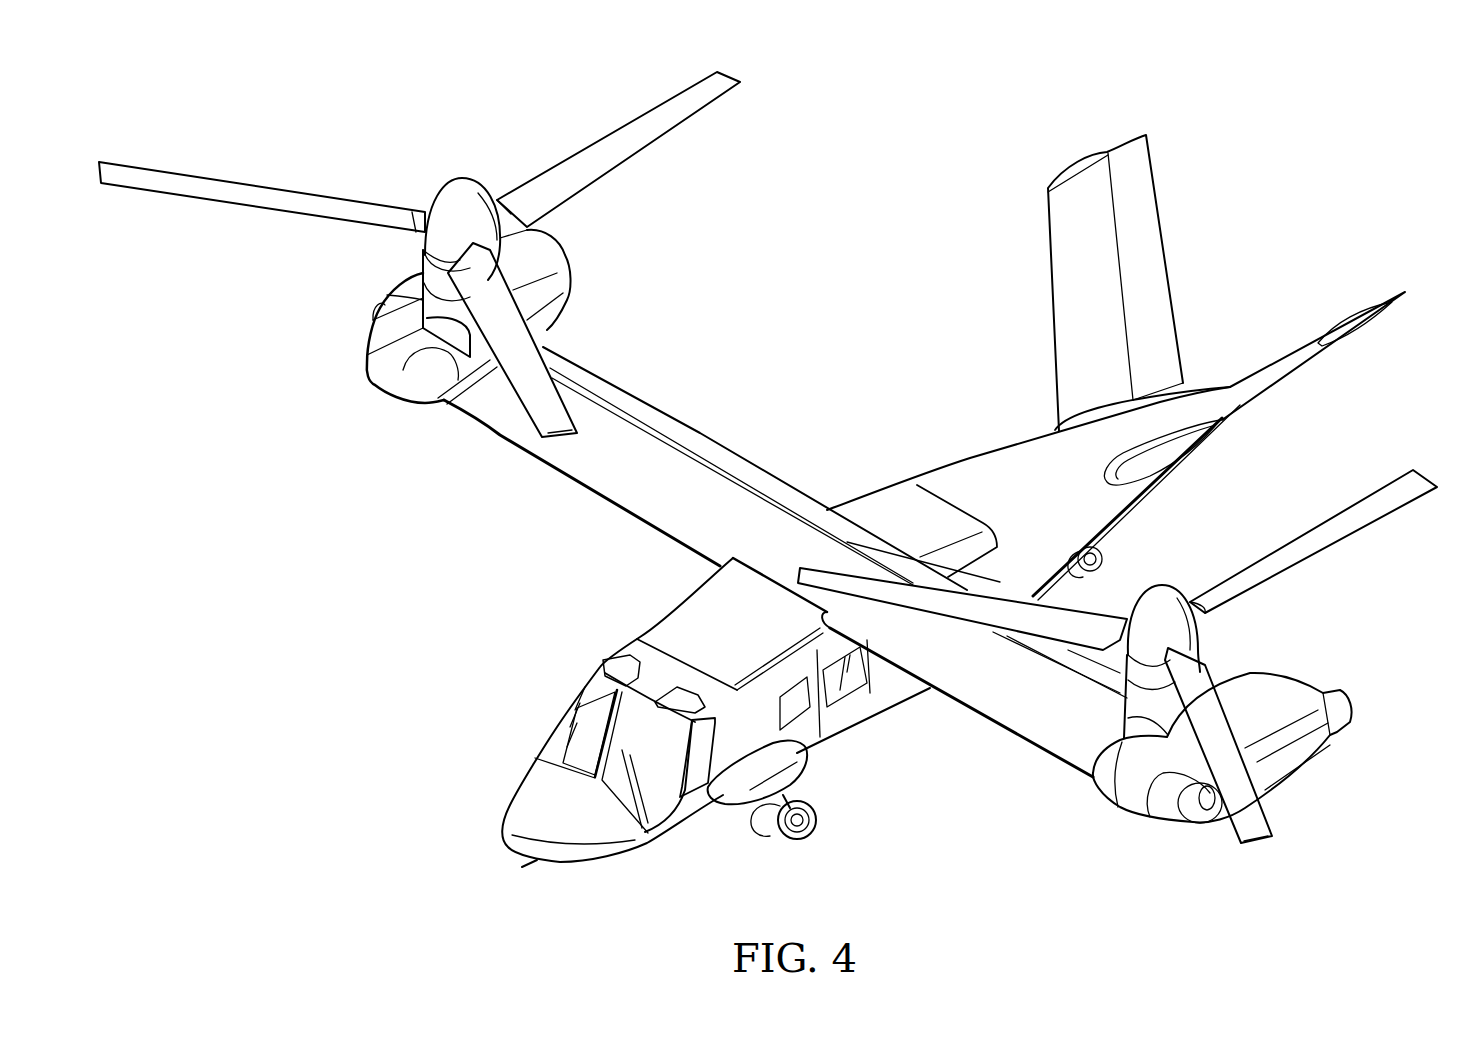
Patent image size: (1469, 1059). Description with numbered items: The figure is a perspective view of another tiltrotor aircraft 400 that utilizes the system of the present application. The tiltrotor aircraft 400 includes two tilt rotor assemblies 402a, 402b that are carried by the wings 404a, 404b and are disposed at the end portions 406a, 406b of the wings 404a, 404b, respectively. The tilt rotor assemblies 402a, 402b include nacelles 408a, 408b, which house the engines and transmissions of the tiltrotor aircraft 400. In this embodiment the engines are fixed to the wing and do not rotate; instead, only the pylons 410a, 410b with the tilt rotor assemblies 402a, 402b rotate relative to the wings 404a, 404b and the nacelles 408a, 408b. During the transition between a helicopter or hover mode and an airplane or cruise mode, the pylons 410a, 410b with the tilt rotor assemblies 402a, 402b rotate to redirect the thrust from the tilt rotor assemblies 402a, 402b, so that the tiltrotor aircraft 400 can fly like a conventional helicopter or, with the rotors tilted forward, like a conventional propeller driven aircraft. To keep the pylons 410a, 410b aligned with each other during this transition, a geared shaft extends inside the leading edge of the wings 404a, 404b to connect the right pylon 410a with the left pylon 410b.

The tiltrotor aircraft 400 is at (784, 463).
The tilt rotor assembly 402a is at (419, 254).
The tilt rotor assembly 402b is at (1133, 656).
The wing 404a is at (625, 486).
The wing 404b is at (985, 693).
The end portion of wing 406a is at (567, 230).
The end portion of wing 406b is at (1370, 693).
The nacelle 408a is at (372, 366).
The nacelle 408b is at (1290, 757).
The pylon 410a is at (434, 280).
The pylon 410b is at (1133, 685).